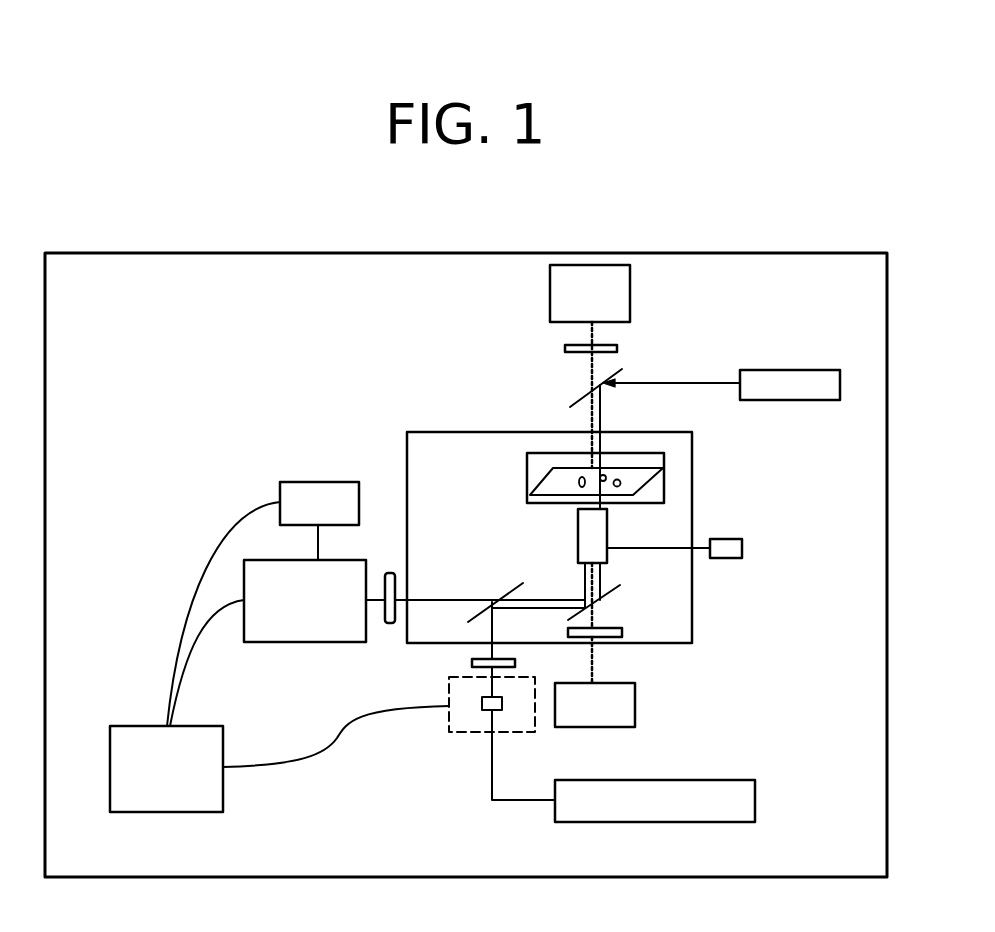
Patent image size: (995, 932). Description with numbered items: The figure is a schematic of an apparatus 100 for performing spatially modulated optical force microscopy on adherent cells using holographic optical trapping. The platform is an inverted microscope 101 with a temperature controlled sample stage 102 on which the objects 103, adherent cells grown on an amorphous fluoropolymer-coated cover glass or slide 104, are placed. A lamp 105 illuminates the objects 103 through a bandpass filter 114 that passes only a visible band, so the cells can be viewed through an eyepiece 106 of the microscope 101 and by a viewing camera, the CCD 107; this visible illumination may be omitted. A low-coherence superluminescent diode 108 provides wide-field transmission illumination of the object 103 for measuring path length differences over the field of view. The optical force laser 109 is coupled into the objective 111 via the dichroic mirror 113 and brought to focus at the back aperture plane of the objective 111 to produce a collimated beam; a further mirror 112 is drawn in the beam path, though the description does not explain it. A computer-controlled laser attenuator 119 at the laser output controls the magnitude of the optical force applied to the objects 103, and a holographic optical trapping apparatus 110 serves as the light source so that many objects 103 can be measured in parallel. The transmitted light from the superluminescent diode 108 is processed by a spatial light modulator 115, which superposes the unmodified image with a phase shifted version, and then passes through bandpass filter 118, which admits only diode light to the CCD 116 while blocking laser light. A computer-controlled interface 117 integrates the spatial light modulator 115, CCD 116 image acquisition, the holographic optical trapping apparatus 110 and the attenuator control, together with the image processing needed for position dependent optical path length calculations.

The apparatus 100 is at (727, 230).
The microscope 101 is at (412, 432).
The sample stage 102 is at (664, 459).
The objects 103 is at (604, 474).
The cover glass or slide 104 is at (650, 480).
The lamp 105 is at (630, 290).
The eyepiece 106 is at (742, 548).
The CCD 107 is at (635, 700).
The superluminescent diode 108 is at (841, 385).
The optical force laser 109 is at (688, 780).
The holographic optical trapping apparatus 110 is at (452, 734).
The objective 111 is at (607, 530).
The mirror 112 is at (503, 598).
The dichroic mirror 113 is at (618, 592).
The bandpass filter 114 is at (548, 341).
The spatial light modulator 115 is at (265, 642).
The CCD 116 is at (318, 482).
The computer-controlled interface 117 is at (126, 726).
The bandpass filter 118 is at (390, 623).
The laser attenuator 119 is at (483, 712).